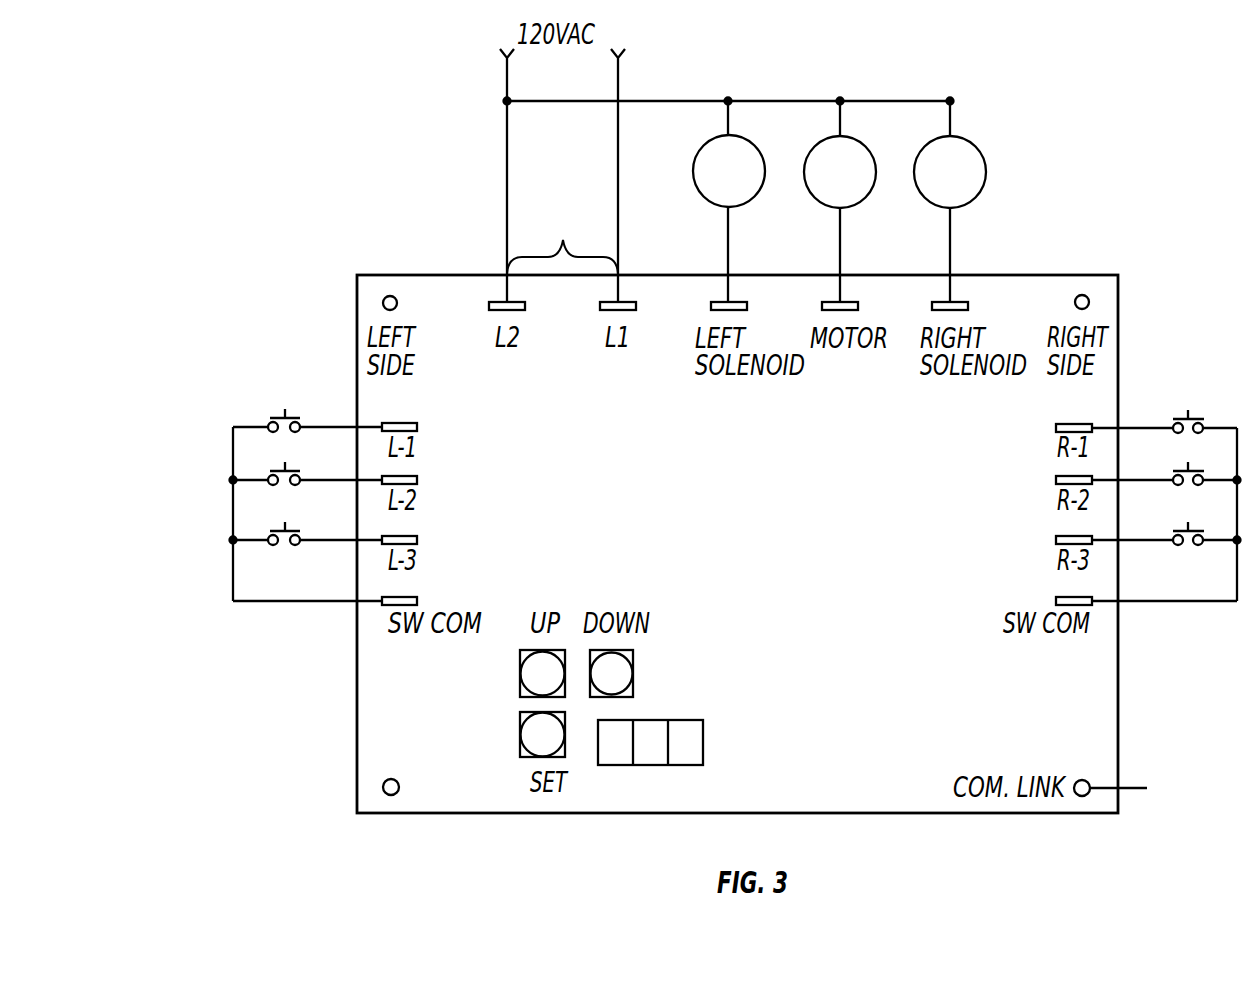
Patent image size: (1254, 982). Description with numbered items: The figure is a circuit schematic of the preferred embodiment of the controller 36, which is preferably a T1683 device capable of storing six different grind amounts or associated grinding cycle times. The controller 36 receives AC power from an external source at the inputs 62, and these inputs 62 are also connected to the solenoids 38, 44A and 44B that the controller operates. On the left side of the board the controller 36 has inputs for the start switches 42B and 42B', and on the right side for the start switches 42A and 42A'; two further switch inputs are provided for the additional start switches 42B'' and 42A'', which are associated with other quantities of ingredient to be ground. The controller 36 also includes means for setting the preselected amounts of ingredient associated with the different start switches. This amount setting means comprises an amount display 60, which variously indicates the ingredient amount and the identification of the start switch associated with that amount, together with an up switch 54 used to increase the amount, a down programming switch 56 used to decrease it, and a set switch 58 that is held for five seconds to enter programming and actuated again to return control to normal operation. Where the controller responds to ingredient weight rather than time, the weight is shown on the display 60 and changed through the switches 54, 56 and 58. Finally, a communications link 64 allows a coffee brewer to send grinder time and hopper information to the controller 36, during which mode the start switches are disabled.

The controller 36 is at (750, 556).
The solenoid 38 is at (855, 151).
The solenoid 44A is at (967, 151).
The solenoid 44B is at (744, 151).
The inputs 62 is at (563, 240).
The start switch 42B is at (298, 405).
The start switch 42B' is at (293, 458).
The additional start switch 42B'' is at (293, 516).
The start switch 42A is at (1107, 435).
The start switch 42A' is at (1106, 488).
The additional start switch 42A'' is at (1103, 548).
The up switch 54 is at (520, 691).
The down programming switch 56 is at (632, 656).
The set switch 58 is at (520, 752).
The amount display 60 is at (651, 766).
The communications link 64 is at (1083, 779).